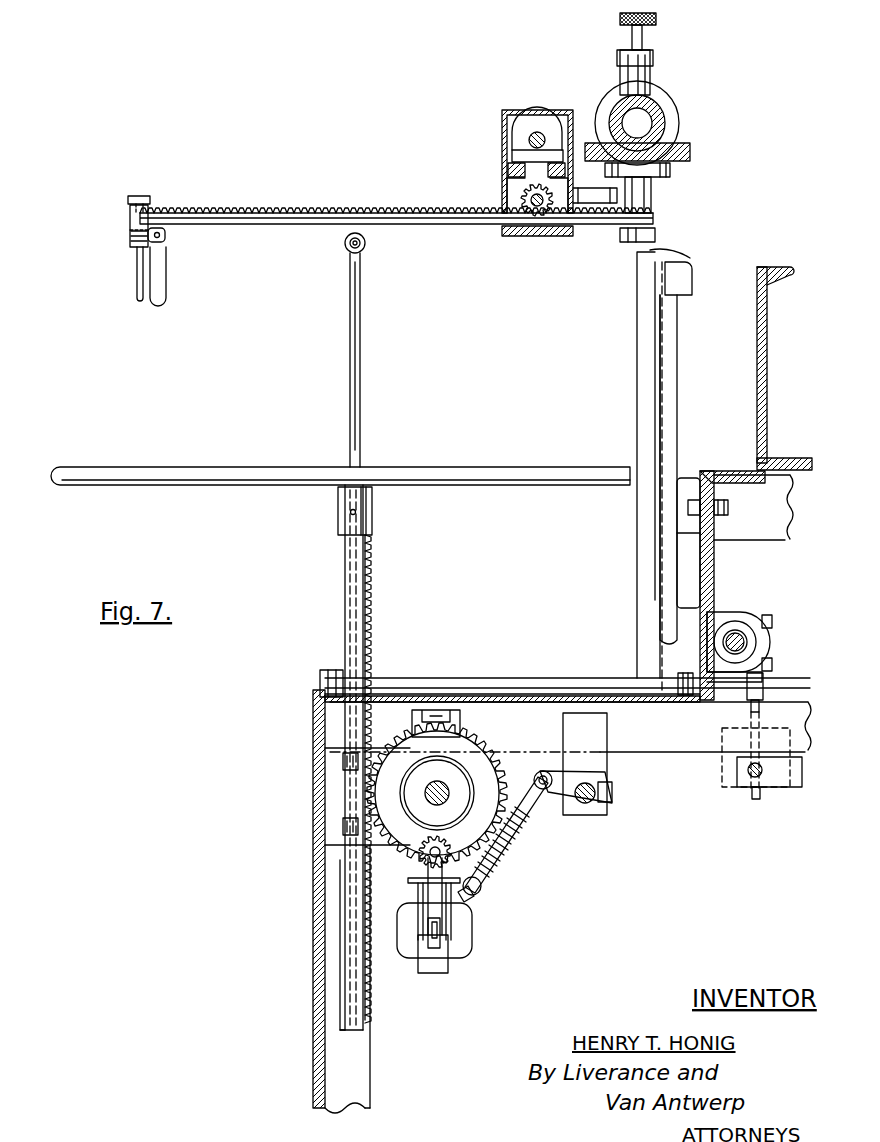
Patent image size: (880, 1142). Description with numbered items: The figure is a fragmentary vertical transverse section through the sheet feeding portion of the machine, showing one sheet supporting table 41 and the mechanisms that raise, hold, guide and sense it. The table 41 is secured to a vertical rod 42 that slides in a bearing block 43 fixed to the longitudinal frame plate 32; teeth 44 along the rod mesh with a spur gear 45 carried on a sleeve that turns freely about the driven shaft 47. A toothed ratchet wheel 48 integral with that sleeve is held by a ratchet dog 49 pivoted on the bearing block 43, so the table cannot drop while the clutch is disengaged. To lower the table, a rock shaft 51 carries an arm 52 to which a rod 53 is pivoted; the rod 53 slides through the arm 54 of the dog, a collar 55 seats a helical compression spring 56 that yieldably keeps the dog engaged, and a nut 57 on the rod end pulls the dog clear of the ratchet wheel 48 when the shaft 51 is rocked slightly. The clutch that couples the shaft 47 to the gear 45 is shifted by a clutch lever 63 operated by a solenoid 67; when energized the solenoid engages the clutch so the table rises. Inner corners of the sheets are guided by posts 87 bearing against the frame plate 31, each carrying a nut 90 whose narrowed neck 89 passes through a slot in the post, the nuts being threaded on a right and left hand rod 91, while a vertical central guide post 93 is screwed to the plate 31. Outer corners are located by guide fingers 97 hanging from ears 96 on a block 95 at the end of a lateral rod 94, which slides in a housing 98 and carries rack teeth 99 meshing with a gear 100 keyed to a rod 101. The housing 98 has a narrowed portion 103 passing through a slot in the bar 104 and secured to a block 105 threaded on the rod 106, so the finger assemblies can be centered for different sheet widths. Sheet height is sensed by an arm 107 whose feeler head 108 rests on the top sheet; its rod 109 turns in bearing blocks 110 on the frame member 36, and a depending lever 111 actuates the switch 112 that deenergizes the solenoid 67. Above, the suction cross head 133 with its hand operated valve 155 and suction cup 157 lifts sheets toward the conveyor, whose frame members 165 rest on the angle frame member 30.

The angle frame member 30 is at (725, 472).
The plate 31 is at (714, 559).
The plates 32 is at (338, 752).
The horizontal frame member 36 is at (670, 755).
The sheet supporting table 41 is at (235, 468).
The rod 42 is at (345, 592).
The bearing block 43 is at (354, 790).
The teeth 44 is at (370, 600).
The spur gear 45 is at (470, 752).
The shaft 47 is at (437, 804).
The toothed ratchet wheel 48 is at (484, 760).
The ratchet dog 49 is at (420, 852).
The rock shaft 51 is at (604, 782).
The arm 52 is at (556, 795).
The rod 53 is at (535, 820).
The arm 54 is at (480, 885).
The collar 55 is at (510, 835).
The helical compression spring 56 is at (500, 850).
The nut 57 is at (468, 898).
The clutch lever 63 is at (428, 894).
The solenoid 67 is at (460, 935).
The guide post 87 is at (640, 357).
The narrowed neck 89 is at (706, 640).
The nut 90 is at (758, 638).
The rod 91 is at (746, 644).
The vertical central guide post 93 is at (669, 351).
The rod 94 is at (278, 213).
The block 95 is at (130, 222).
The ears 96 is at (132, 236).
The guide fingers 97 is at (150, 300).
The housing 98 is at (505, 205).
The rack teeth 99 is at (405, 213).
The gear 100 is at (512, 195).
The rod 101 is at (522, 200).
The narrowed portion 103 is at (524, 160).
The bar 104 is at (520, 176).
The block 105 is at (530, 128).
The rod 106 is at (537, 140).
The arm 107 is at (360, 370).
The feeler head 108 is at (363, 250).
The rod 109 is at (495, 678).
The bearing blocks 110 is at (322, 672).
The lever 111 is at (762, 698).
The switch 112 is at (775, 770).
The suction cross head 133 is at (658, 124).
The hand operated valve 155 is at (642, 37).
The suction cup 157 is at (655, 235).
The conveyor frame members 165 is at (763, 380).